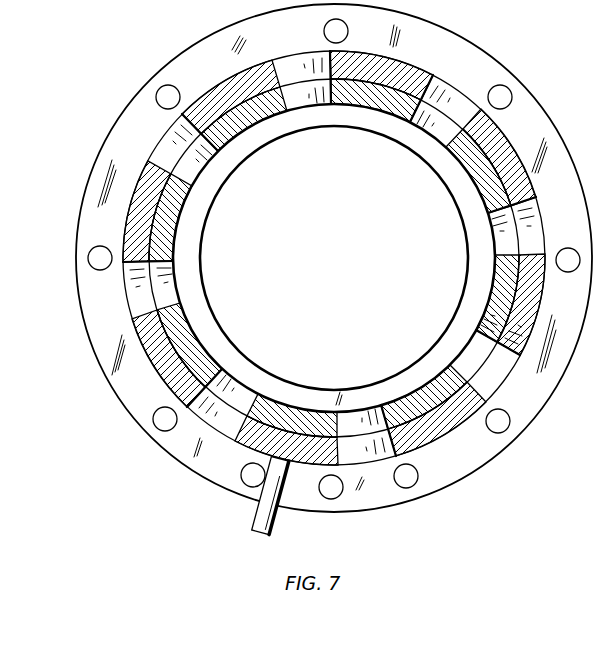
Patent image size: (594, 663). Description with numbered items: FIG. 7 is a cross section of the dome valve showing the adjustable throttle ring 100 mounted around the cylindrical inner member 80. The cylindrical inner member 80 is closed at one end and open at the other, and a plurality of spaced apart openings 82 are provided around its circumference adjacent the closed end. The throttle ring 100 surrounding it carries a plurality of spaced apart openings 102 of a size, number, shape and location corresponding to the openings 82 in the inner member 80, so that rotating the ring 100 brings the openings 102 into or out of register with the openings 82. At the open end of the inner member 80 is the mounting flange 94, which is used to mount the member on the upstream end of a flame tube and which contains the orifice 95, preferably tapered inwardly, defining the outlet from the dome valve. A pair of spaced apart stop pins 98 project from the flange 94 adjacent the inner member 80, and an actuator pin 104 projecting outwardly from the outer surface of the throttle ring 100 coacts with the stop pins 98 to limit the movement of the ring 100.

The cylindrical inner member 80 is at (190, 342).
The openings 82 is at (158, 292).
The mounting flange 94 is at (473, 455).
The orifice 95 is at (348, 403).
The stop pins 98 is at (253, 478).
The adjustable throttle ring 100 is at (140, 348).
The openings 102 is at (143, 293).
The actuator pin 104 is at (280, 518).